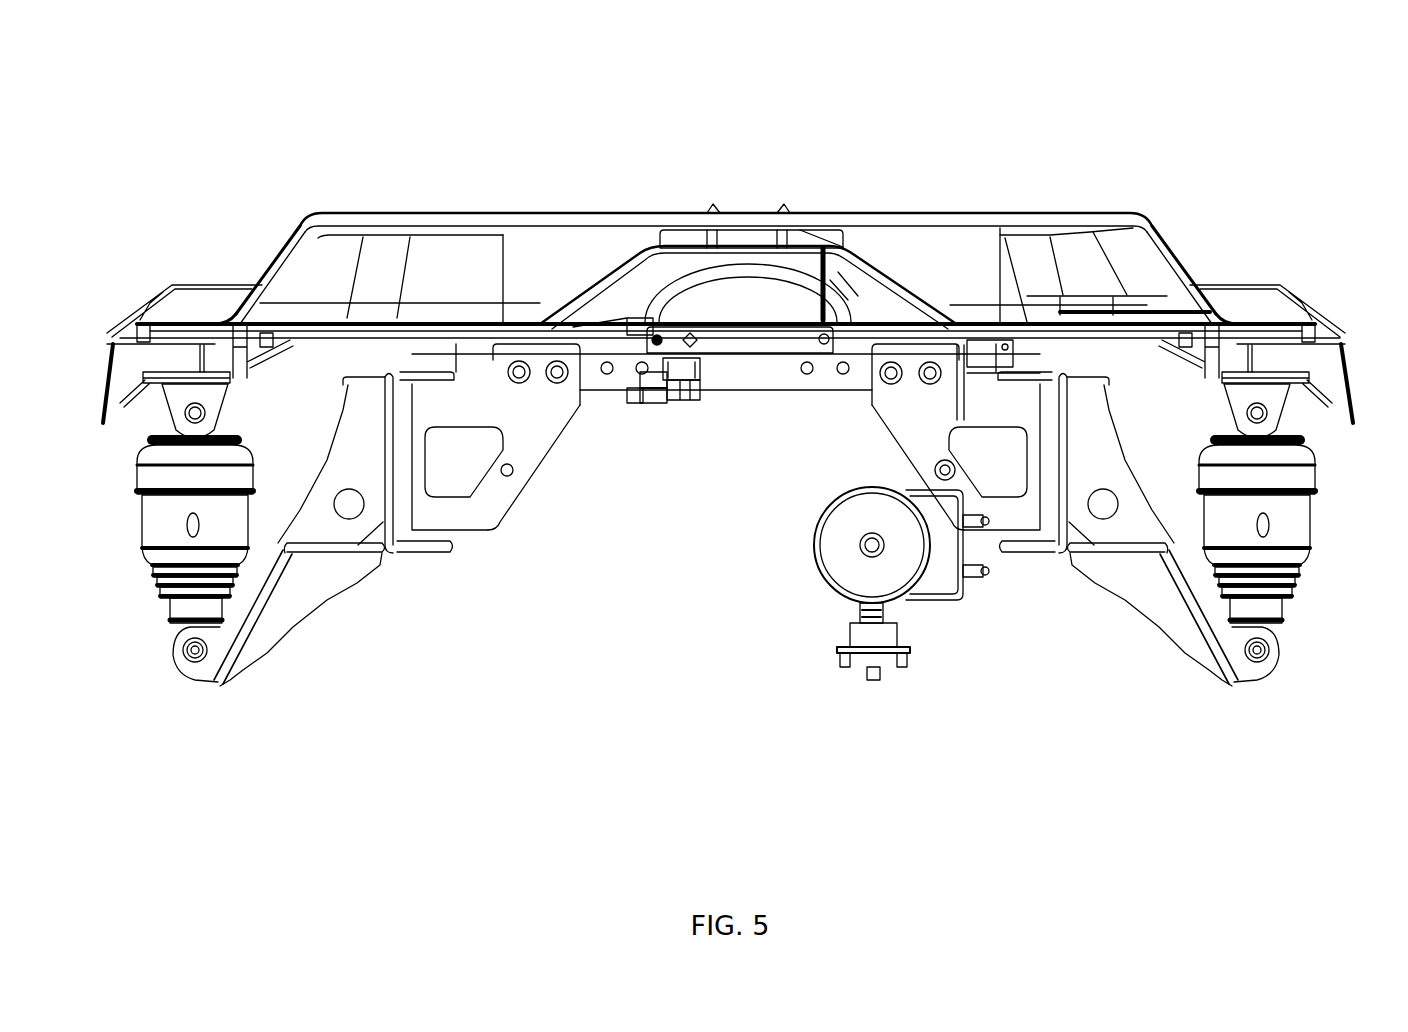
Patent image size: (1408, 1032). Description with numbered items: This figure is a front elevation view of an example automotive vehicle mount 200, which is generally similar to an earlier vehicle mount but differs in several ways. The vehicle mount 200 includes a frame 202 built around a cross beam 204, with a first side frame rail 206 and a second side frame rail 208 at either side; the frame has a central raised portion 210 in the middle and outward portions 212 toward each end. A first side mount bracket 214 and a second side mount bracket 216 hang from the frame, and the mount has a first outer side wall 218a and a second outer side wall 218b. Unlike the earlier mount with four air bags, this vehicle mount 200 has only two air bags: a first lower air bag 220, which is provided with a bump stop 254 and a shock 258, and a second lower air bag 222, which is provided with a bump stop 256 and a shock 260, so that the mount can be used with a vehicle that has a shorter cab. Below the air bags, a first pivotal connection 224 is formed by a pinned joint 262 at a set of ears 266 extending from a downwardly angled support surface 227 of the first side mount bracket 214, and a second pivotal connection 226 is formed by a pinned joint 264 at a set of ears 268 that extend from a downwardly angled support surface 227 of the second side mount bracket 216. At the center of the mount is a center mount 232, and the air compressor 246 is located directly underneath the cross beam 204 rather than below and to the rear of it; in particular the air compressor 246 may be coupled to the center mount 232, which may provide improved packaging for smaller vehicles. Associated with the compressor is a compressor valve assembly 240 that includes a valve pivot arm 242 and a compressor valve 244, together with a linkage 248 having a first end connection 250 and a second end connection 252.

The automotive vehicle mount 200 is at (1000, 78).
The frame 202 is at (485, 125).
The cross beam 204 is at (597, 203).
The first side frame rail 206 is at (1035, 555).
The second side frame rail 208 is at (428, 555).
The central raised portion 210 is at (860, 213).
The outward portions 212 is at (282, 262).
The first side mount bracket 214 is at (1150, 597).
The second side mount bracket 216 is at (330, 566).
The first outer side wall 218a is at (1112, 518).
The second outer side wall 218b is at (498, 512).
The first lower air bag 220 is at (1300, 535).
The second lower air bag 222 is at (155, 537).
The first pivotal connection 224 is at (1294, 650).
The second pivotal connection 226 is at (158, 645).
The downwardly angled support surface 227 is at (262, 605).
The center mount 232 is at (543, 435).
The compressor valve assembly 240 is at (680, 430).
The valve pivot arm 242 is at (760, 343).
The compressor valve 244 is at (702, 360).
The air compressor 246 is at (850, 560).
The linkage 248 is at (797, 232).
The first end connection 250 is at (825, 345).
The second end connection 252 is at (688, 345).
The bump stop 254 is at (1268, 520).
The bump stop 256 is at (187, 520).
The shock 258 is at (1270, 603).
The shock 260 is at (185, 605).
The pinned joint 262 is at (1270, 660).
The pinned joint 264 is at (185, 657).
The set of ears 266 is at (1240, 655).
The set of ears 268 is at (210, 660).